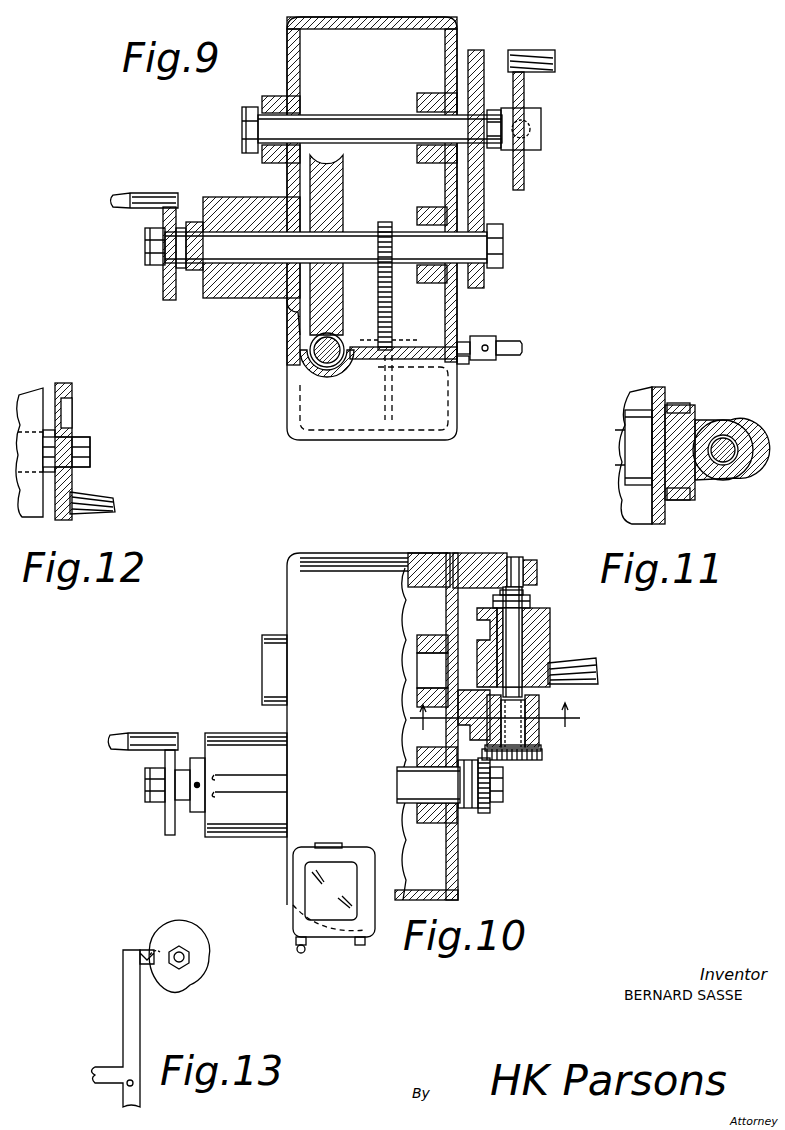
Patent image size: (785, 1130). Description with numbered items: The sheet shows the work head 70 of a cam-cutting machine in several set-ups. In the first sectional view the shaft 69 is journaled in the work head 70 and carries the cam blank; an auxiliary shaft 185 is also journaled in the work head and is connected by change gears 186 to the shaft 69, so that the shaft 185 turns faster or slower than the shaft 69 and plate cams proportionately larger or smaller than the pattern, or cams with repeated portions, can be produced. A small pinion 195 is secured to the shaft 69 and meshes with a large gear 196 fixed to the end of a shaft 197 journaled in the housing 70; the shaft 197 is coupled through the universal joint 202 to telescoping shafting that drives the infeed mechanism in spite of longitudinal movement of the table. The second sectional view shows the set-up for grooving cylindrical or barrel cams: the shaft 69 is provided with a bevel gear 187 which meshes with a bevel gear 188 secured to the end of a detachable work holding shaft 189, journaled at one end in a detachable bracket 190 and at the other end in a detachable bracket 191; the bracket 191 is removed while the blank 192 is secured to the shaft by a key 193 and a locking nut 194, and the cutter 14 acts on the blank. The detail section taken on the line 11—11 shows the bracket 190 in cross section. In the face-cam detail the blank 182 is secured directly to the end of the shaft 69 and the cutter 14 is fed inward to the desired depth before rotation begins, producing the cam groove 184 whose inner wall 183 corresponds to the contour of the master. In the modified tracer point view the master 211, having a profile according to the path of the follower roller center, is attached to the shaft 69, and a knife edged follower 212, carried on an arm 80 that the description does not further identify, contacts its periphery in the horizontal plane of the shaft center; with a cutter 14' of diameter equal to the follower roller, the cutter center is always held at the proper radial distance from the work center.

In FIG. 9, the work head 70 is at (452, 293).
In FIG. 9, the auxiliary shaft 185 is at (338, 130).
In FIG. 9, the change gears 186 is at (486, 190).
In FIG. 9, the shaft 69 is at (408, 232).
In FIG. 12, the shaft 69 is at (35, 460).
In FIG. 10, the shaft 69 is at (407, 792).
In FIG. 13, the shaft 69 is at (190, 966).
In FIG. 9, the small pinion 195 is at (383, 222).
In FIG. 9, the large gear 196 is at (380, 395).
In FIG. 9, the universal joint 202 is at (490, 334).
In FIG. 9, the shaft 197 is at (462, 364).
In FIG. 12, the blank 182 is at (68, 385).
In FIG. 12, the cam groove 184 is at (73, 403).
In FIG. 12, the inner wall 183 is at (73, 422).
In FIG. 12, the cutter 14 is at (98, 495).
In FIG. 10, the cutter 14 is at (583, 661).
In FIG. 11, the detachable bracket 190 is at (695, 428).
In FIG. 10, the detachable bracket 190 is at (537, 735).
In FIG. 10, the detachable bracket 191 is at (488, 562).
In FIG. 10, the key 193 is at (494, 614).
In FIG. 10, the locking nut 194 is at (530, 602).
In FIG. 10, the blank 192 is at (532, 628).
In FIG. 10, the section line 11— 11 is at (494, 710).
In FIG. 10, the bevel gear 188 is at (543, 760).
In FIG. 10, the detachable work holding shaft 189 is at (512, 765).
In FIG. 10, the bevel gear 187 is at (500, 810).
In FIG. 13, the arm 80 is at (141, 1016).
In FIG. 13, the knife edged follower 212 is at (147, 953).
In FIG. 13, the master 211 is at (195, 942).
In FIG. 13, the cutter 14' is at (168, 930).